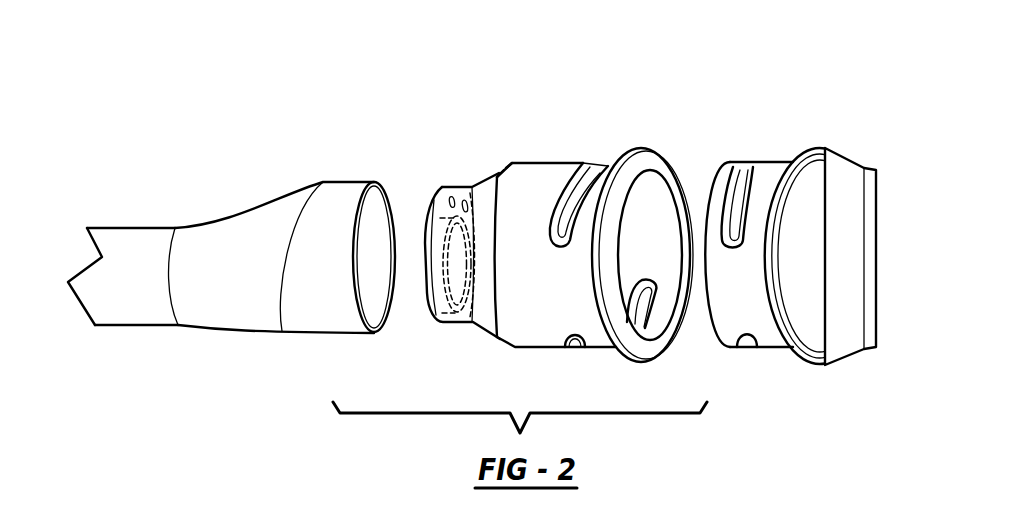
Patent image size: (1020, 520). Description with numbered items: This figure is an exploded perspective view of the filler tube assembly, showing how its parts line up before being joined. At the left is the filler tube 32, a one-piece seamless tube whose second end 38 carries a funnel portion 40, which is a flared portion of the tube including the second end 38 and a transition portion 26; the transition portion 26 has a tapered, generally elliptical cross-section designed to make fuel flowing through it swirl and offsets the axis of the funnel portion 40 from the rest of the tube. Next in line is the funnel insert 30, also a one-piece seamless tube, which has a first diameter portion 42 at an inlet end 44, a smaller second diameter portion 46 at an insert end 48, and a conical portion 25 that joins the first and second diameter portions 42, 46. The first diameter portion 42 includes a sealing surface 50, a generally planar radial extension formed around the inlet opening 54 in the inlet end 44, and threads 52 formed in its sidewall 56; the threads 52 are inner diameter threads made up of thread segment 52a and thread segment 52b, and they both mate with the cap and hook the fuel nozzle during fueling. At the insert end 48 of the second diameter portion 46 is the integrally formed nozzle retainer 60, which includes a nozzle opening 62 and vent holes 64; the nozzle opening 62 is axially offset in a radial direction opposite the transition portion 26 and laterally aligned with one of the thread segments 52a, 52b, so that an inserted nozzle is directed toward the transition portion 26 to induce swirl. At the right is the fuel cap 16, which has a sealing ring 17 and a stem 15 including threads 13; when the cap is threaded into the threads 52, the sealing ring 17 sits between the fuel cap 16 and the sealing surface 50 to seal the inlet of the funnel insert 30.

The threads 13 is at (748, 338).
The stem 15 is at (743, 268).
The fuel cap 16 is at (858, 160).
The sealing ring 17 is at (790, 147).
The conical portion 25 is at (493, 190).
The transition portion 26 is at (278, 197).
The funnel insert 30 is at (518, 162).
The filler tube 32 is at (232, 203).
The second end 38 is at (350, 330).
The funnel portion 40 is at (260, 275).
The first diameter portion 42 is at (522, 313).
The inlet end 44 is at (614, 163).
The second diameter portion 46 is at (471, 327).
The insert end 48 is at (456, 324).
The sealing surface 50 is at (645, 165).
The threads 52 is at (563, 182).
The thread segment 52a is at (592, 165).
The thread segment 52b is at (577, 340).
The inlet opening 54 is at (663, 258).
The sidewall 56 is at (574, 287).
The nozzle retainer 60 is at (470, 226).
The nozzle opening 62 is at (457, 267).
The vent holes 64 is at (448, 203).